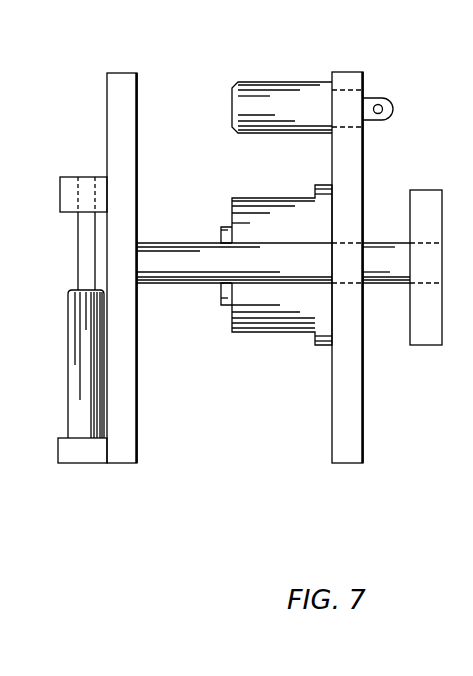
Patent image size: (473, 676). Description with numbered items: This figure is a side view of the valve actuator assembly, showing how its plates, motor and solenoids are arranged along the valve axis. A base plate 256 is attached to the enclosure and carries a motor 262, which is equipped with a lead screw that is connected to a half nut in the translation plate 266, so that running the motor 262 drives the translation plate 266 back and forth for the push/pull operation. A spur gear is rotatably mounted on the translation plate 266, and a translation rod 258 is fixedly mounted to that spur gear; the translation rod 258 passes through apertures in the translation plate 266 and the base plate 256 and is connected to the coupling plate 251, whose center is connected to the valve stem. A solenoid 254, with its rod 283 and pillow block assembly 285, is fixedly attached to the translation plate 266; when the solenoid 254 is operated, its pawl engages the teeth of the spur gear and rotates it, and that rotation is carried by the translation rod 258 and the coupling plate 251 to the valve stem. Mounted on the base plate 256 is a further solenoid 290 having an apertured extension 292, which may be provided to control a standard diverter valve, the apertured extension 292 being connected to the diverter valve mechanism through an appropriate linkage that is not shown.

The translation plate 266 is at (126, 85).
The pillow block assembly 285 is at (80, 183).
The rod 283 is at (87, 245).
The solenoid 254 is at (82, 396).
The translation rod 258 is at (198, 262).
The motor 262 is at (277, 298).
The solenoid 290 is at (264, 102).
The base plate 256 is at (344, 80).
The apertured extension 292 is at (392, 103).
The coupling plate 251 is at (425, 202).